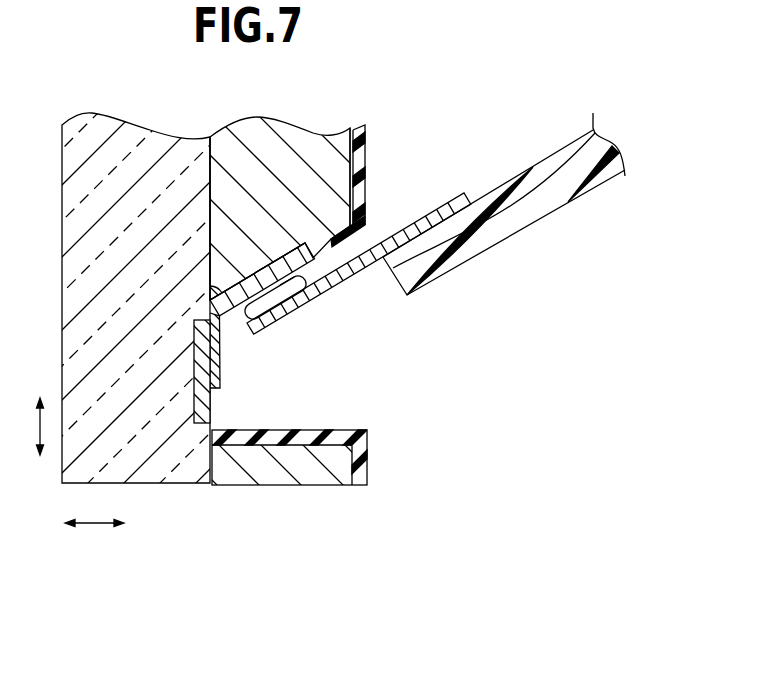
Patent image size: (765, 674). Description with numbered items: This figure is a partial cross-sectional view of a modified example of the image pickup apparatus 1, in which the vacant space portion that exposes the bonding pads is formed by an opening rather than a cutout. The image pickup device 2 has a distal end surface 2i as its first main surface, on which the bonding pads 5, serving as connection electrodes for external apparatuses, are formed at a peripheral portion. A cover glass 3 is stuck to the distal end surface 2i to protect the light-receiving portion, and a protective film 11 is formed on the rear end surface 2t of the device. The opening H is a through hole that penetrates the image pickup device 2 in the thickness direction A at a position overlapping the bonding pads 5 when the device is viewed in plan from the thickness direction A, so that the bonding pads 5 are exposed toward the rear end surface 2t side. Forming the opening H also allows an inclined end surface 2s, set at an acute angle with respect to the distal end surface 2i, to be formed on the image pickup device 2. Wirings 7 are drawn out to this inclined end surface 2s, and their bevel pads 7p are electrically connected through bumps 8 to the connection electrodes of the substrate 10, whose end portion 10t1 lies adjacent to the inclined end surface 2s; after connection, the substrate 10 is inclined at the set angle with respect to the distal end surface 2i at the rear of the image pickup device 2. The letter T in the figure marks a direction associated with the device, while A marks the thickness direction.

The image pickup apparatus 1 is at (233, 150).
The image pickup device 2 is at (250, 286).
The distal end surface 2i is at (200, 183).
The inclined end surface 2s is at (287, 246).
The rear end surface 2t is at (343, 182).
The cover glass 3 is at (132, 137).
The bonding pads 5 is at (204, 422).
The wirings 7 is at (359, 287).
The bevel pads 7p is at (330, 276).
The bumps 8 is at (292, 295).
The substrate 10 is at (435, 266).
The tool tip 10t1 is at (263, 318).
The protective film 11 is at (360, 160).
The opening H is at (341, 415).
The thickness direction T is at (32, 426).
The thickness direction A is at (94, 512).